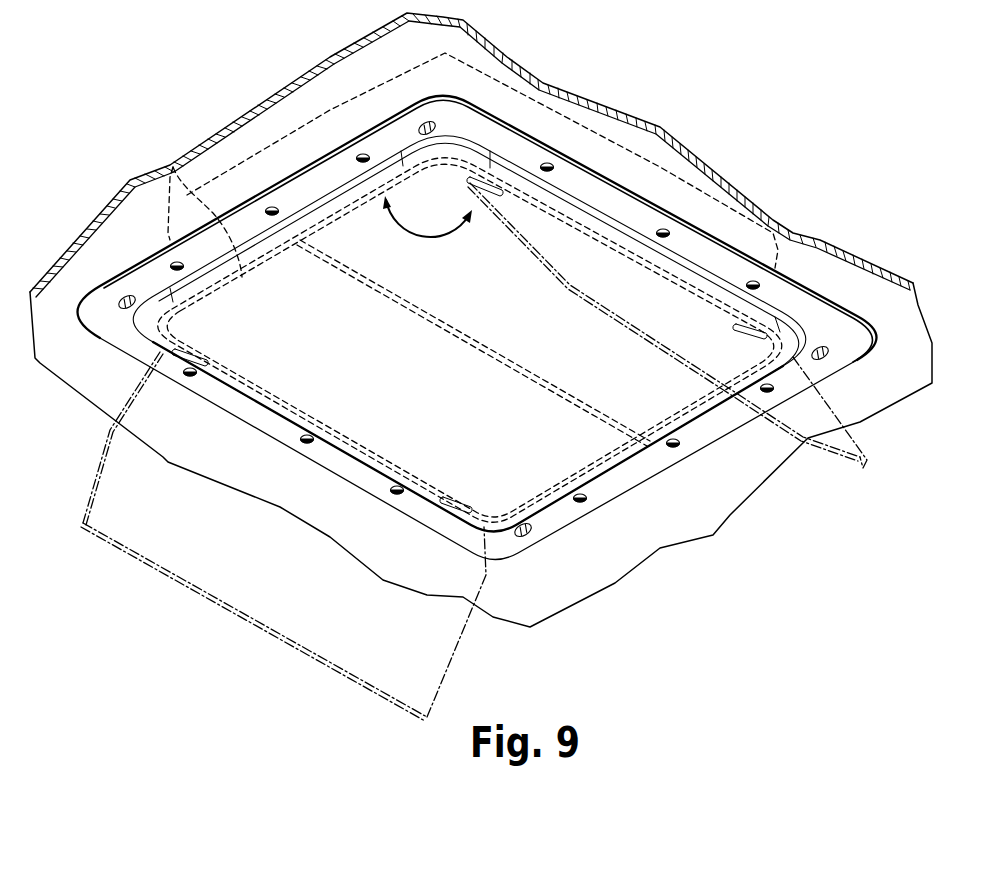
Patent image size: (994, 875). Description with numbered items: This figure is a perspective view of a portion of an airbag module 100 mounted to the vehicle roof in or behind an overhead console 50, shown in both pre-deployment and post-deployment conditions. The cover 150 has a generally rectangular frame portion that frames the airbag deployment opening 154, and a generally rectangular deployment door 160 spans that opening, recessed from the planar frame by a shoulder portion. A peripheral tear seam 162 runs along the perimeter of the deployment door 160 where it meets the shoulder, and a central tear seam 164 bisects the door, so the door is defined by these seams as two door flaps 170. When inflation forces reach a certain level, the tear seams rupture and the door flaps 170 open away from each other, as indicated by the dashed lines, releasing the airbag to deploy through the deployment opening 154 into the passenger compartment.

The overhead console 50 is at (107, 237).
The airbag module 100 is at (84, 354).
The cover 150 is at (290, 290).
The airbag deployment opening 154 is at (372, 392).
The deployment door 160 is at (537, 458).
The peripheral tear seam 162 is at (173, 167).
The central tear seam 164 is at (383, 297).
The door flap 170 is at (213, 555).